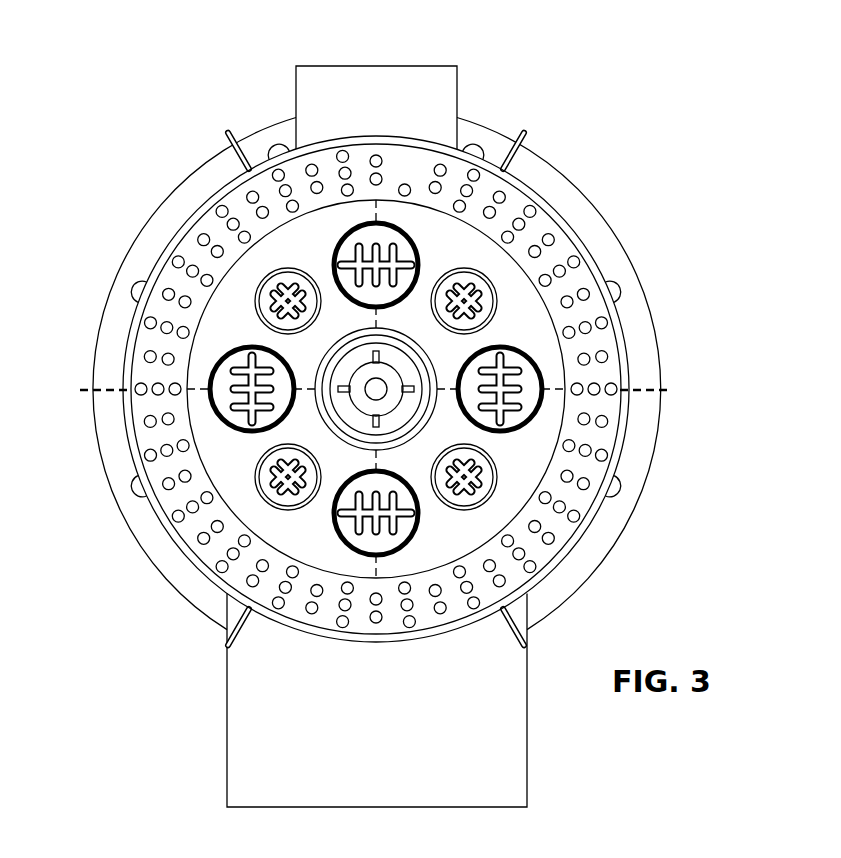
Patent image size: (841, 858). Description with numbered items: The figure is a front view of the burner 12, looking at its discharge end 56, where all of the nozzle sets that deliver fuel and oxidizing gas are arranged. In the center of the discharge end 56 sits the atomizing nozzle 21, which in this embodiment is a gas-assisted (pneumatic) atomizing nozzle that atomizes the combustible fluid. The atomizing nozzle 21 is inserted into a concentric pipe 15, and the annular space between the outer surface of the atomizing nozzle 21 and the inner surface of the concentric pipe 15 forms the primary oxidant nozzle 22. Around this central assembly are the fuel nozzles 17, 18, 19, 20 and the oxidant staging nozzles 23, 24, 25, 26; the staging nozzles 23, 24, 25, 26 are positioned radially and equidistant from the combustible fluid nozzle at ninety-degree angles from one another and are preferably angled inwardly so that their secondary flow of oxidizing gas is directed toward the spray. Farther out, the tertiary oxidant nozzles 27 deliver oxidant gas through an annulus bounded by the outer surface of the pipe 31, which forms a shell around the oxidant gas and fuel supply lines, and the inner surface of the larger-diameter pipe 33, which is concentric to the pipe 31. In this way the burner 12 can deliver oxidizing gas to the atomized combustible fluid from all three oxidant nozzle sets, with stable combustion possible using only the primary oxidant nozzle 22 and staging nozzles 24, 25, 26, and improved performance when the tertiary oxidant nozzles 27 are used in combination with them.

The burner 12 is at (170, 125).
The concentric pipe 15 is at (330, 363).
The fuel nozzle 17 is at (265, 292).
The fuel nozzle 18 is at (265, 480).
The fuel nozzle 19 is at (470, 452).
The fuel nozzle 20 is at (478, 283).
The atomizing nozzle 21 is at (376, 389).
The primary oxidant nozzle 22 is at (410, 363).
The oxidant staging nozzle 23 is at (230, 407).
The oxidant staging nozzle 24 is at (365, 538).
The oxidant staging nozzle 25 is at (521, 372).
The oxidant staging nozzle 26 is at (388, 238).
The tertiary oxidant nozzles 27 is at (150, 322).
The pipe 31 is at (190, 352).
The larger-diameter pipe 33 is at (130, 372).
The discharge end 56 is at (513, 283).